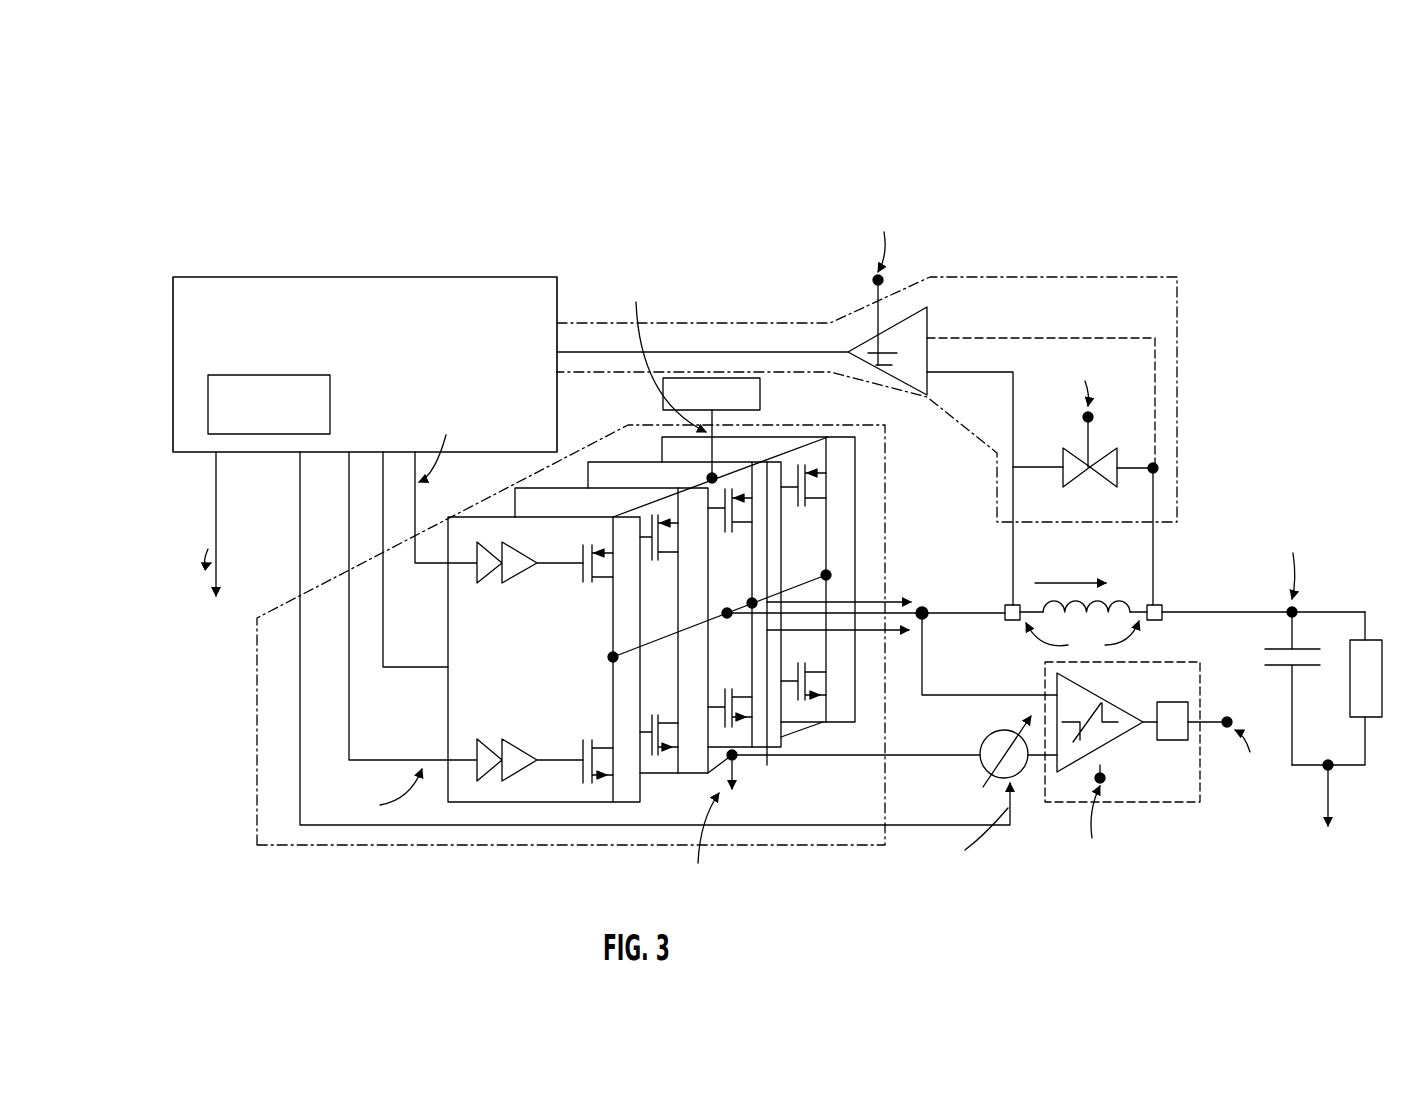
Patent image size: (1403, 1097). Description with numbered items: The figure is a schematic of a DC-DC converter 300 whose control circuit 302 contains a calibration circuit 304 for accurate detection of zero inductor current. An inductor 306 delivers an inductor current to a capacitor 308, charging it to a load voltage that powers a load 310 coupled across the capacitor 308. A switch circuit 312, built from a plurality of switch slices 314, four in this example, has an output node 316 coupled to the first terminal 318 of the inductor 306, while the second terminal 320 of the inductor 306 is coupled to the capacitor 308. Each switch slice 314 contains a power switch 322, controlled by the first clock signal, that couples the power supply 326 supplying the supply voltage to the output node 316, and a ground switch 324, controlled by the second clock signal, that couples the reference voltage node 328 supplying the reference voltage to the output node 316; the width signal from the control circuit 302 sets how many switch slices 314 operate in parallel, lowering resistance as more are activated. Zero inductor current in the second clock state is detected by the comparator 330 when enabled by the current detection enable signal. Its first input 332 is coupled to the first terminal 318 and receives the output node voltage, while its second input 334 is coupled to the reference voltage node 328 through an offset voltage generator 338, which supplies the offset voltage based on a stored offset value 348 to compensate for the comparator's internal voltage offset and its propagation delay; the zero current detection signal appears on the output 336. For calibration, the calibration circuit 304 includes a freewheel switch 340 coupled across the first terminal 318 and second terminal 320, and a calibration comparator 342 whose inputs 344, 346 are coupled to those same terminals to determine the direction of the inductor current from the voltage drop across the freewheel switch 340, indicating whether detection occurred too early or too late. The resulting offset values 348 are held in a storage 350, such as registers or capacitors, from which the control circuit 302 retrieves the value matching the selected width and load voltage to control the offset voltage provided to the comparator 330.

The DC-DC converter 300 is at (972, 158).
The control circuit 302 is at (490, 366).
The calibration circuit 304 is at (1180, 315).
The inductor 306 is at (1120, 594).
The capacitor 308 is at (1270, 648).
The load 310 is at (1378, 640).
The switch circuit 312 is at (433, 674).
The switch slices 314 is at (693, 775).
The output node 316 is at (931, 604).
The first terminal 318 is at (1004, 621).
The second terminal 320 is at (1162, 605).
The power switch 322 is at (580, 578).
The ground switch 324 is at (580, 748).
The power supply 326 is at (711, 430).
The reference voltage node 328 is at (737, 757).
The comparator 330 is at (1183, 803).
The first input 332 is at (1055, 702).
The second input 334 is at (1036, 763).
The output 336 is at (1207, 723).
The offset voltage generator 338 is at (980, 762).
The freewheel switch 340 is at (1118, 462).
The calibration comparator 342 is at (927, 317).
The input 344 is at (940, 372).
The input 346 is at (948, 338).
The stored offset value 348 is at (231, 406).
The storage 350 is at (208, 375).